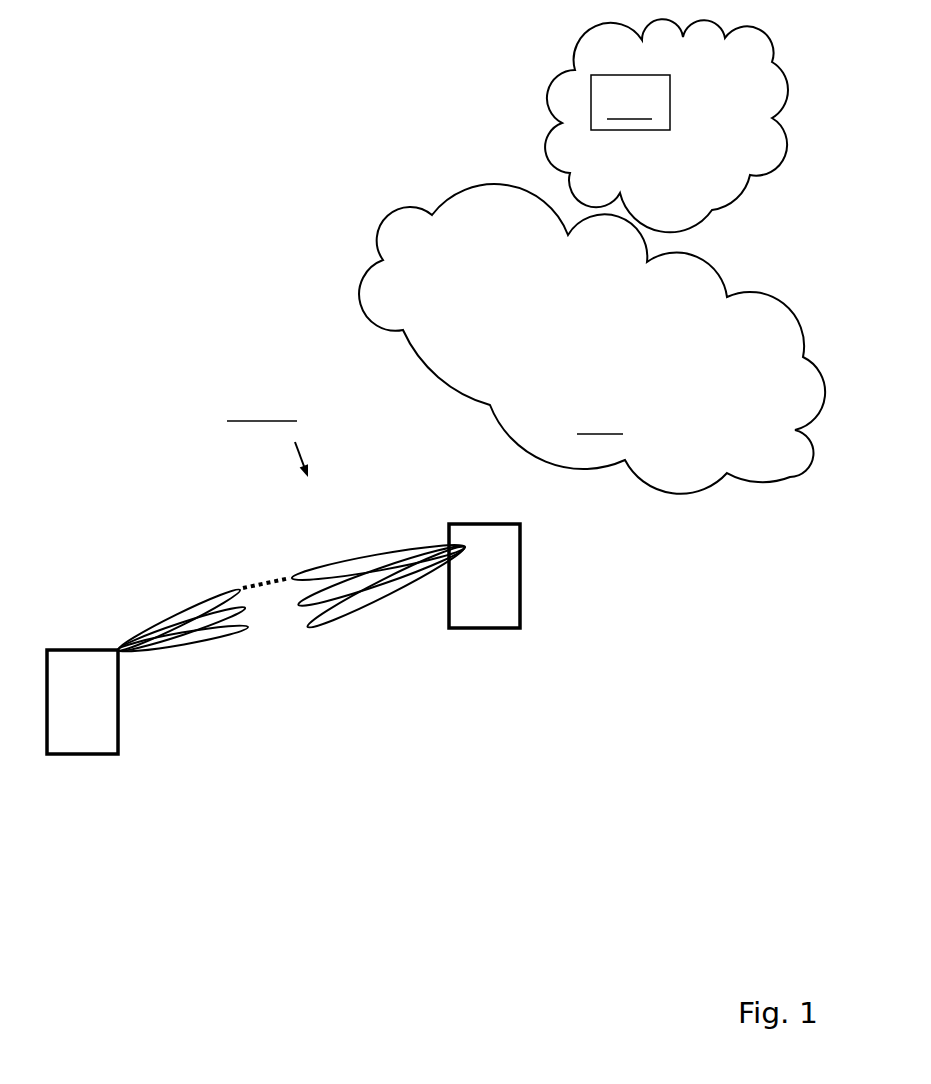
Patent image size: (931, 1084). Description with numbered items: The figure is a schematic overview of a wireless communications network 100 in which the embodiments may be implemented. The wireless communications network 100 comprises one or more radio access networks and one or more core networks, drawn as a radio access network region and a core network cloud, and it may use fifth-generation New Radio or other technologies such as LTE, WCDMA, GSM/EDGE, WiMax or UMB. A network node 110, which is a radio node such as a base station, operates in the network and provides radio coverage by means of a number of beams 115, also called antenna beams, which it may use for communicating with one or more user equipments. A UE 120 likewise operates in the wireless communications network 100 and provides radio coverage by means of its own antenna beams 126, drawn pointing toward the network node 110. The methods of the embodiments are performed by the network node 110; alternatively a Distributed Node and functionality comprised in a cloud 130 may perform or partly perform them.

The wireless communications network 100 is at (200, 203).
The network node 110 is at (520, 593).
The beams 115 is at (443, 545).
The UE 120 is at (115, 685).
The antenna beams 126 is at (120, 648).
The cloud 130 is at (738, 123).